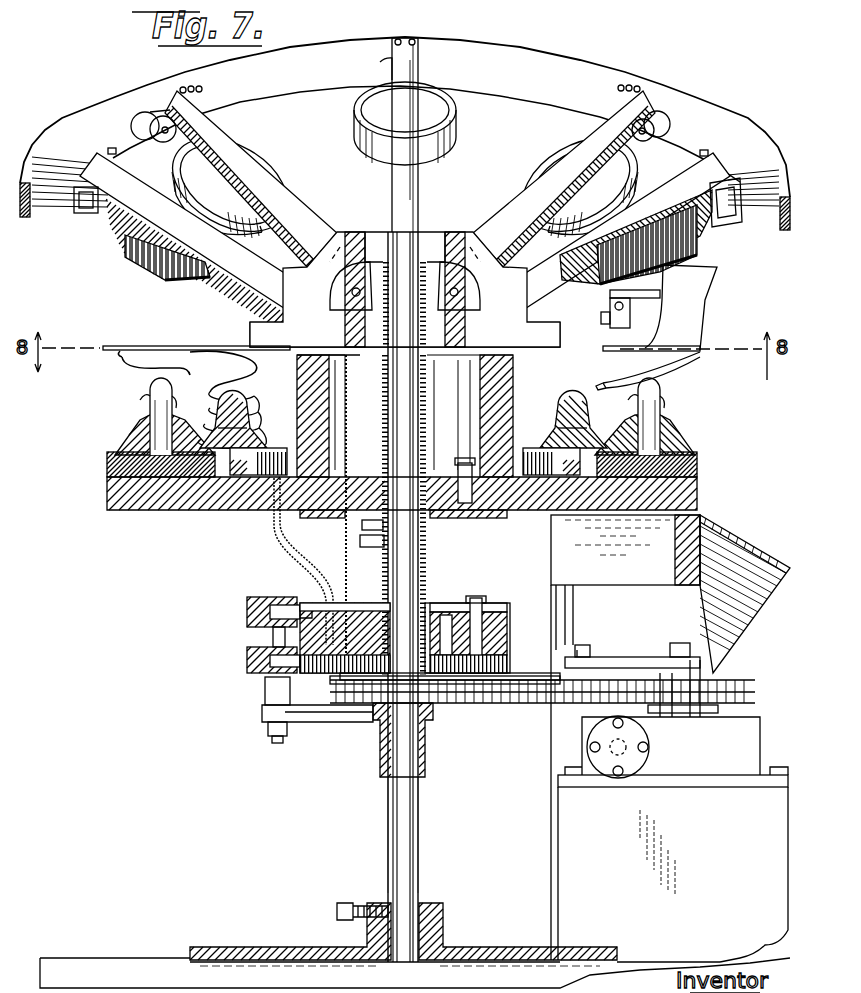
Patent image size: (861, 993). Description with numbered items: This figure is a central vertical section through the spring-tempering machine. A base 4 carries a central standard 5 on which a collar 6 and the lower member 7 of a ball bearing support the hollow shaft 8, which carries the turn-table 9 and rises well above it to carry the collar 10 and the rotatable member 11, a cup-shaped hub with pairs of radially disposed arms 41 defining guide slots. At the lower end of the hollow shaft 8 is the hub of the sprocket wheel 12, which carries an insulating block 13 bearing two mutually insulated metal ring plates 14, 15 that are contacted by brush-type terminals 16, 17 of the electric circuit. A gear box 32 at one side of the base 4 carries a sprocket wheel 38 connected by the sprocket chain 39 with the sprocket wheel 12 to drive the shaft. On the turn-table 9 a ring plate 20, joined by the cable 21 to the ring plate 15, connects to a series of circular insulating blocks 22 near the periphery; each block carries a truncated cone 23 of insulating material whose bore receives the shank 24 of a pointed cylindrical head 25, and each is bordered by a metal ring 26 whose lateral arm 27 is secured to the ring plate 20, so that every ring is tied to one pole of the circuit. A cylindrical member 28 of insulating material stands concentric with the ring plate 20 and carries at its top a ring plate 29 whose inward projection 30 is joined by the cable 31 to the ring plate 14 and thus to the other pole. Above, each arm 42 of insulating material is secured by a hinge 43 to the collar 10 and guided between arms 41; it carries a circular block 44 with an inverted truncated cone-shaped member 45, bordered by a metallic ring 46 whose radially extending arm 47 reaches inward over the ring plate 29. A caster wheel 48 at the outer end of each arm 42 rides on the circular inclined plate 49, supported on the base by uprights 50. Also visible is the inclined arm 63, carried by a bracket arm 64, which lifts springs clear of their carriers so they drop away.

The base 4 is at (304, 947).
The central standard 5 is at (388, 855).
The collar 6 is at (433, 735).
The lower member of ball bearing 7 is at (433, 695).
The hollow shaft 8 is at (420, 578).
The turn-table 9 is at (118, 511).
The collar 10 is at (440, 240).
The rotatable member 11 is at (372, 231).
The sprocket wheel 12 is at (358, 692).
The insulating block 13 is at (498, 638).
The ring plate 14 is at (498, 668).
The ring plate 15 is at (503, 610).
The terminal 16 is at (247, 668).
The terminal 17 is at (247, 612).
The ring plate 20 is at (268, 455).
The cable 21 is at (315, 572).
The circular insulating block 22 is at (186, 478).
The truncated cone 23 is at (208, 440).
The shank 24 is at (145, 425).
The head 25 is at (148, 400).
The metal ring 26 is at (107, 457).
The lateral projection or arm 27 is at (236, 480).
The cylindrical member 28 is at (297, 405).
The ring plate 29 is at (483, 363).
The inwardly extending projection 30 is at (250, 366).
The cable 31 is at (350, 592).
The gear box 32 is at (748, 755).
The sprocket wheel 38 is at (752, 693).
The sprocket chain 39 is at (542, 705).
The radially disposed arms 41 is at (288, 333).
The arm 42 is at (296, 232).
The hinge 43 is at (405, 294).
The circular block 44 is at (215, 178).
The inverted truncated cone-shaped member 45 is at (703, 252).
The metallic ring 46 is at (445, 134).
The radially extending arm 47 is at (240, 274).
The caster wheel 48 is at (132, 124).
The circular inclined plate 49 is at (700, 112).
The uprights 50 is at (198, 366).
The arm 63 is at (673, 338).
The bracket arm 64 is at (652, 298).